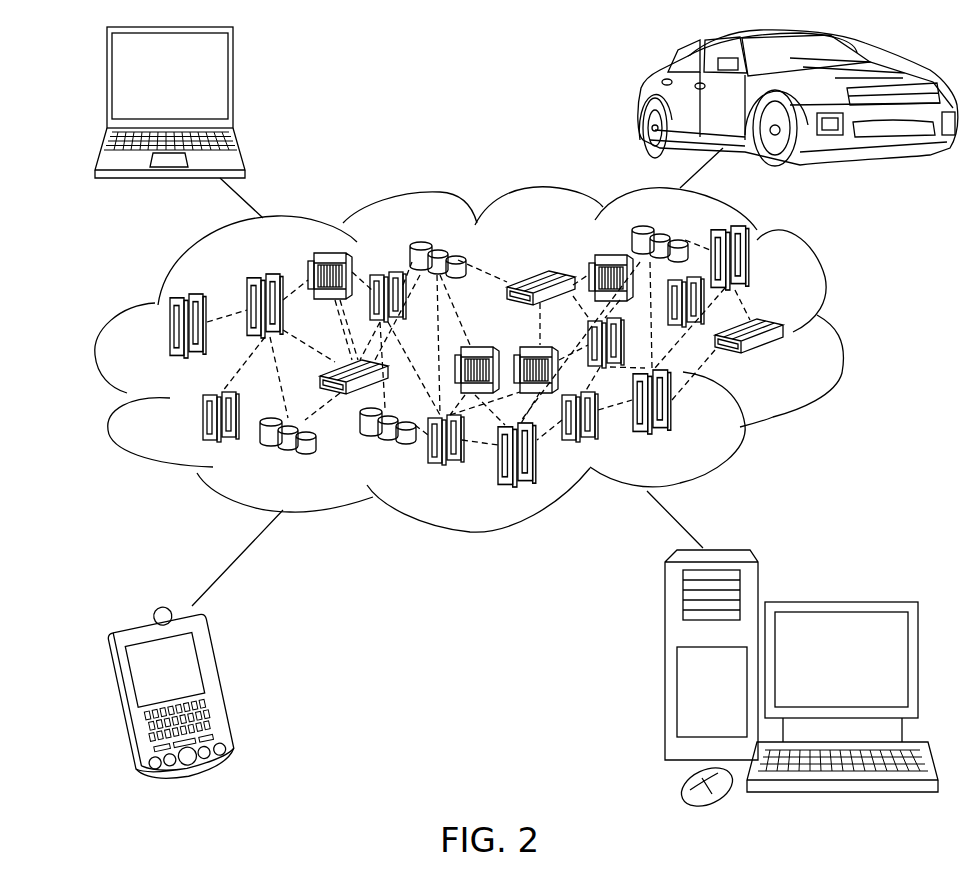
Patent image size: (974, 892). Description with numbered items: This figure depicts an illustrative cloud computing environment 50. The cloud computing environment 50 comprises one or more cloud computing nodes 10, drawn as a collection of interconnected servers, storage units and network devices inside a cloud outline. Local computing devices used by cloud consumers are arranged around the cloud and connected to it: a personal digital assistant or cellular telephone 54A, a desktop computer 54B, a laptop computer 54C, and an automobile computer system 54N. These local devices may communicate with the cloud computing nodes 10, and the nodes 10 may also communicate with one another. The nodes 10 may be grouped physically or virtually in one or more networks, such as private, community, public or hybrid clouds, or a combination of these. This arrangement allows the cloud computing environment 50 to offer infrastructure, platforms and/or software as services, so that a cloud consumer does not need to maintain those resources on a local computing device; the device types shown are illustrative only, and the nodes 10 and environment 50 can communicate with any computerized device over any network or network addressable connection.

The cloud computing nodes 10 is at (790, 362).
The cloud computing environment 50 is at (837, 333).
The personal digital assistant or cellular telephone 54A is at (225, 687).
The desktop computer 54B is at (838, 602).
The laptop computer 54C is at (233, 82).
The automobile computer system 54N is at (635, 100).